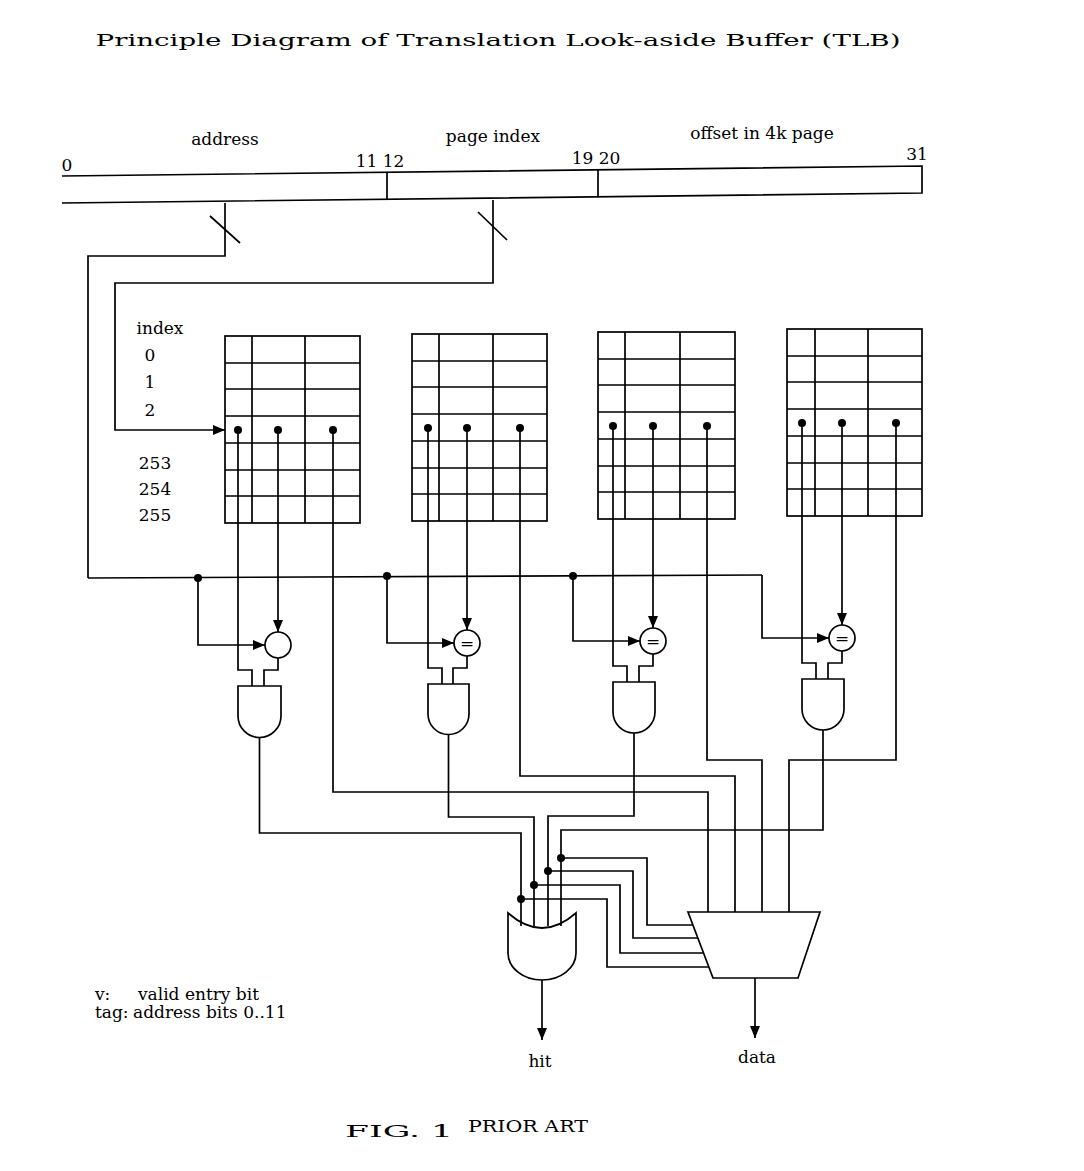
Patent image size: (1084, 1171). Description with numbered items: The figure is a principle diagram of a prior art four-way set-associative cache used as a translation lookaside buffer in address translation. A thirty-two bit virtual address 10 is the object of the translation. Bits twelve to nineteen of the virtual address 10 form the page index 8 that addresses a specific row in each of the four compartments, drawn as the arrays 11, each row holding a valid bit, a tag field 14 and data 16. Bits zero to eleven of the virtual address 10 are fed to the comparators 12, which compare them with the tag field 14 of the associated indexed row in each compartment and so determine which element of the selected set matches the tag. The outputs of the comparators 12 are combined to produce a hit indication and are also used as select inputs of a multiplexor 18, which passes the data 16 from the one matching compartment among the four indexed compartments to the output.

The page index field (8 bits) 8 is at (322, 315).
The virtual address 10 is at (663, 183).
The arrays 11 is at (414, 308).
The comparators 12 is at (313, 677).
The tag field 14 is at (642, 324).
The data 16 is at (708, 637).
The multiplexor 18 is at (797, 928).